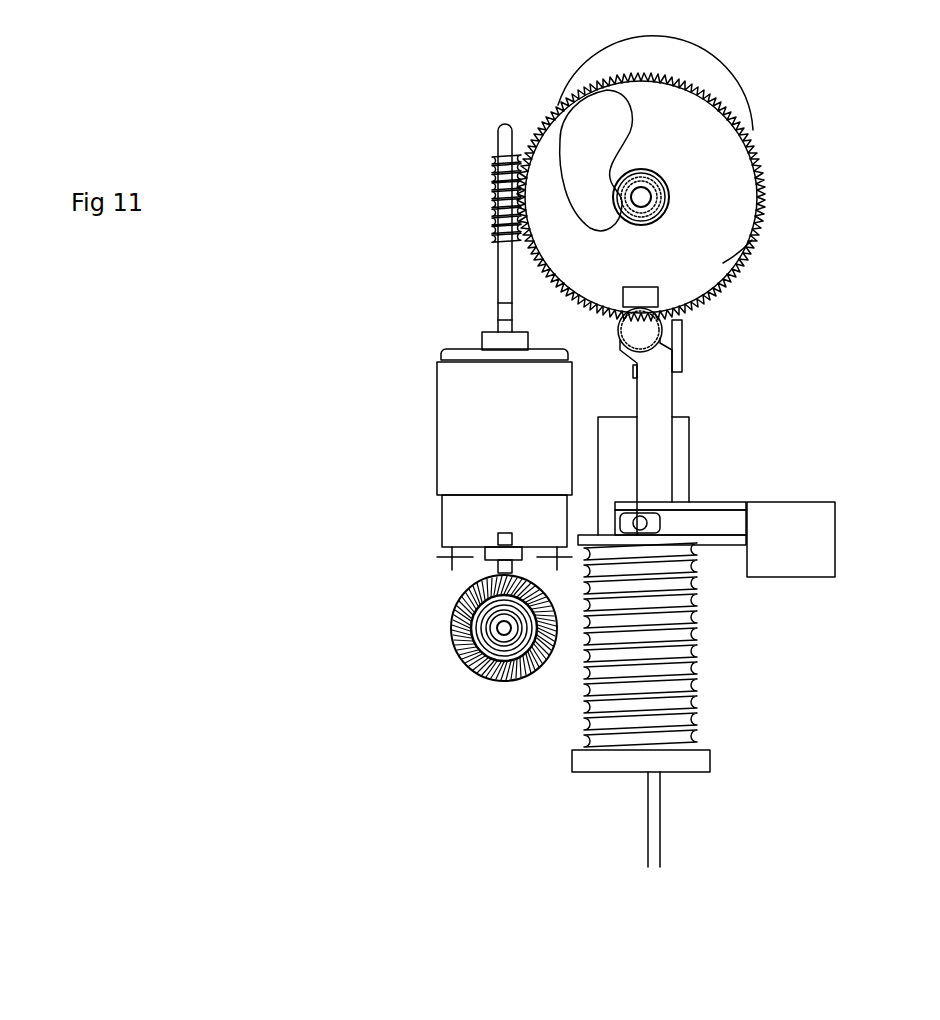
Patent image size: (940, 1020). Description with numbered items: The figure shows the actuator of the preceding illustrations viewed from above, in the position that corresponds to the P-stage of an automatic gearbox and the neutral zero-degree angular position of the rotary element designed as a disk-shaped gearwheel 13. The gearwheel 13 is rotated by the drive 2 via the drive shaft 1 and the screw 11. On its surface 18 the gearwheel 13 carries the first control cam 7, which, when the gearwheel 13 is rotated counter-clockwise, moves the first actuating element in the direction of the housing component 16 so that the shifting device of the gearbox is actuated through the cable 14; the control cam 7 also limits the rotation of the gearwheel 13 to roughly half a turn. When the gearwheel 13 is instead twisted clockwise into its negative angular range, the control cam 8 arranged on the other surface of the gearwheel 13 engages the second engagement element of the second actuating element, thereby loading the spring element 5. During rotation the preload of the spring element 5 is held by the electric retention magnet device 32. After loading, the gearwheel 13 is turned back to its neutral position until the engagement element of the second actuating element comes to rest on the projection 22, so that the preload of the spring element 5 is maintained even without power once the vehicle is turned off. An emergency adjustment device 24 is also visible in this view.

The drive shaft 1 is at (497, 141).
The drive 2 is at (452, 413).
The spring element 5 is at (700, 670).
The first control cam 7 is at (695, 58).
The control cam 8 is at (590, 118).
The screw 11 is at (495, 195).
The rotary element/gearwheel 13 is at (763, 175).
The cable 14 is at (652, 805).
The housing component 16 is at (578, 758).
The surface 18 is at (723, 263).
The projection 22 is at (645, 295).
The emergency adjustment device 24 is at (418, 626).
The electric retention magnet device 32 is at (815, 537).